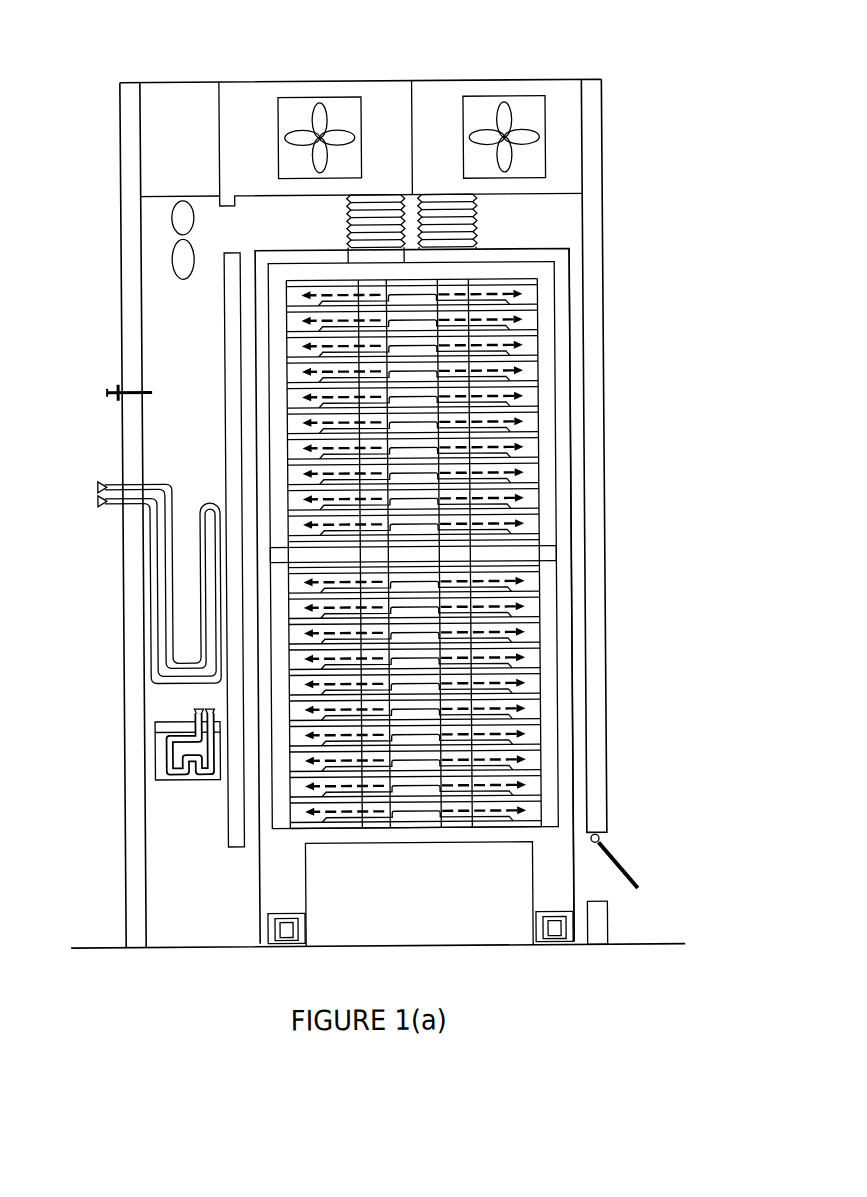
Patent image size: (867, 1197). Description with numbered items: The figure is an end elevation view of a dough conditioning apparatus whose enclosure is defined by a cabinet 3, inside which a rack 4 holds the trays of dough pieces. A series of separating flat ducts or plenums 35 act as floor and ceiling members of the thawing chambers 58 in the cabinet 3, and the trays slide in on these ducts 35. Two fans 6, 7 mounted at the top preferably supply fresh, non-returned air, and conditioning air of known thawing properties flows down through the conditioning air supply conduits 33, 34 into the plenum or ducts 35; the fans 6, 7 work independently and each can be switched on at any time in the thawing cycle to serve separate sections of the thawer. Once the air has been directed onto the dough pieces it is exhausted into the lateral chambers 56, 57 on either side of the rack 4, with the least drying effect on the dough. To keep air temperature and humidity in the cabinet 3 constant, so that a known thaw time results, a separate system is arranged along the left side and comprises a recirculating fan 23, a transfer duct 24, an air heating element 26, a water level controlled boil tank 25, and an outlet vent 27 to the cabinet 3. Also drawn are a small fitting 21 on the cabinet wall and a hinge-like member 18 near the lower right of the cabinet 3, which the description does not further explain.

The cabinet 3 is at (131, 88).
The lateral chamber 56 is at (250, 252).
The fan 6 is at (320, 114).
The fan 7 is at (508, 113).
The recirculating fan 23 is at (182, 226).
The conditioning air supply conduit 33 is at (350, 222).
The conditioning air supply conduit 34 is at (485, 221).
The rack 4 is at (555, 300).
The lateral chamber 57 is at (574, 347).
The thawing chamber 58 is at (521, 428).
The separating flat duct 35 is at (538, 470).
The transfer duct 24 is at (156, 320).
The sensor 21 is at (107, 391).
The air heating element 26 is at (157, 576).
The water level controlled boil tank 25 is at (171, 750).
The outlet vent 27 is at (247, 852).
The door hinge 18 is at (620, 864).